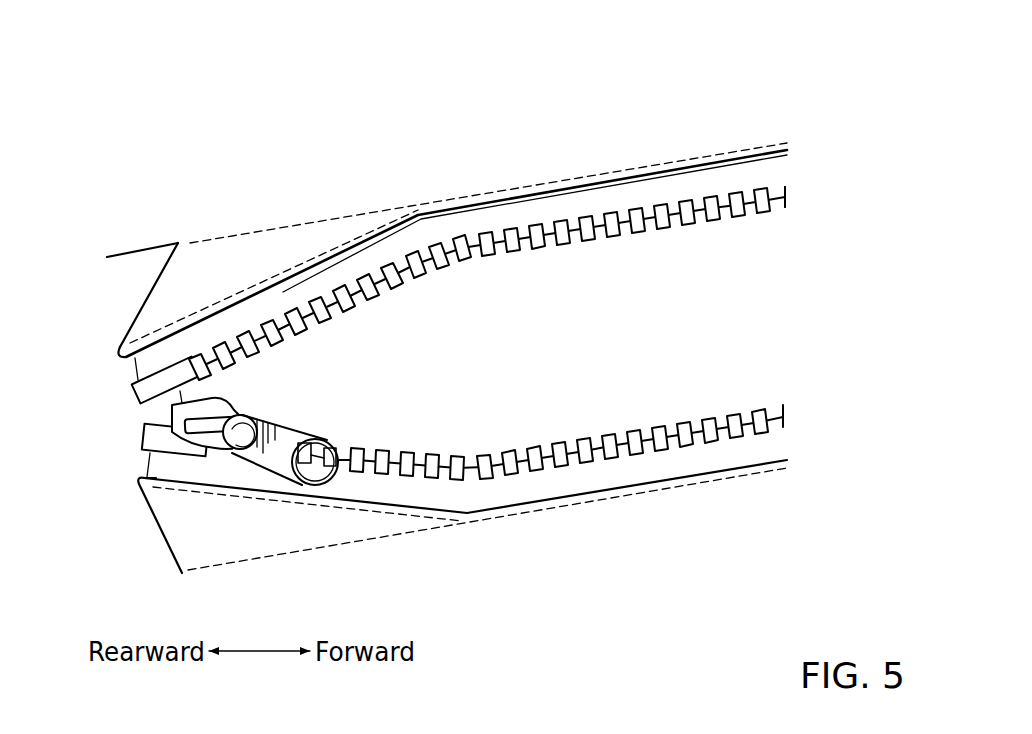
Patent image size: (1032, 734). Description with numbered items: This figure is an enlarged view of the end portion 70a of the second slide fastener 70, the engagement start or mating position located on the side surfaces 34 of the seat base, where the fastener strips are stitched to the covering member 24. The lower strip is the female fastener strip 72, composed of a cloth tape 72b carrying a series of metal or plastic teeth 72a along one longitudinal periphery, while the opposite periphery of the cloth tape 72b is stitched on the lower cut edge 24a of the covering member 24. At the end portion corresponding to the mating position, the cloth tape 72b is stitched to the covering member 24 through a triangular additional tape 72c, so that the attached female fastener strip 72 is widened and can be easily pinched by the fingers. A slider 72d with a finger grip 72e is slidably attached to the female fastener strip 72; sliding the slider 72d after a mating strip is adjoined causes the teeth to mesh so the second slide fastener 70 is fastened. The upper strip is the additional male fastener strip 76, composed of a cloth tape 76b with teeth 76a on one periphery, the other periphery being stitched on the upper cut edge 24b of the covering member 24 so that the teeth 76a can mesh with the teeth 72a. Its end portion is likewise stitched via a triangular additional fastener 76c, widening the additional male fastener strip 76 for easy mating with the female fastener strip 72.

The covering member 24 is at (364, 184).
The lower cut edge 24a is at (528, 503).
The upper cut edge 24b is at (467, 207).
The side surfaces 34 is at (567, 128).
The second slide fastener 70 is at (803, 308).
The end portion of the second slide fastener 70a is at (133, 240).
The female fastener strip 72 is at (133, 492).
The teeth 72a is at (435, 463).
The cloth tape 72b is at (760, 445).
The triangular additional tape 72c is at (172, 520).
The slider 72d is at (145, 432).
The finger grip 72e is at (293, 438).
The additional male fastener strip 76 is at (112, 360).
The teeth 76a is at (357, 320).
The cloth tape 76b is at (753, 177).
The triangular additional fastener 76c is at (185, 283).